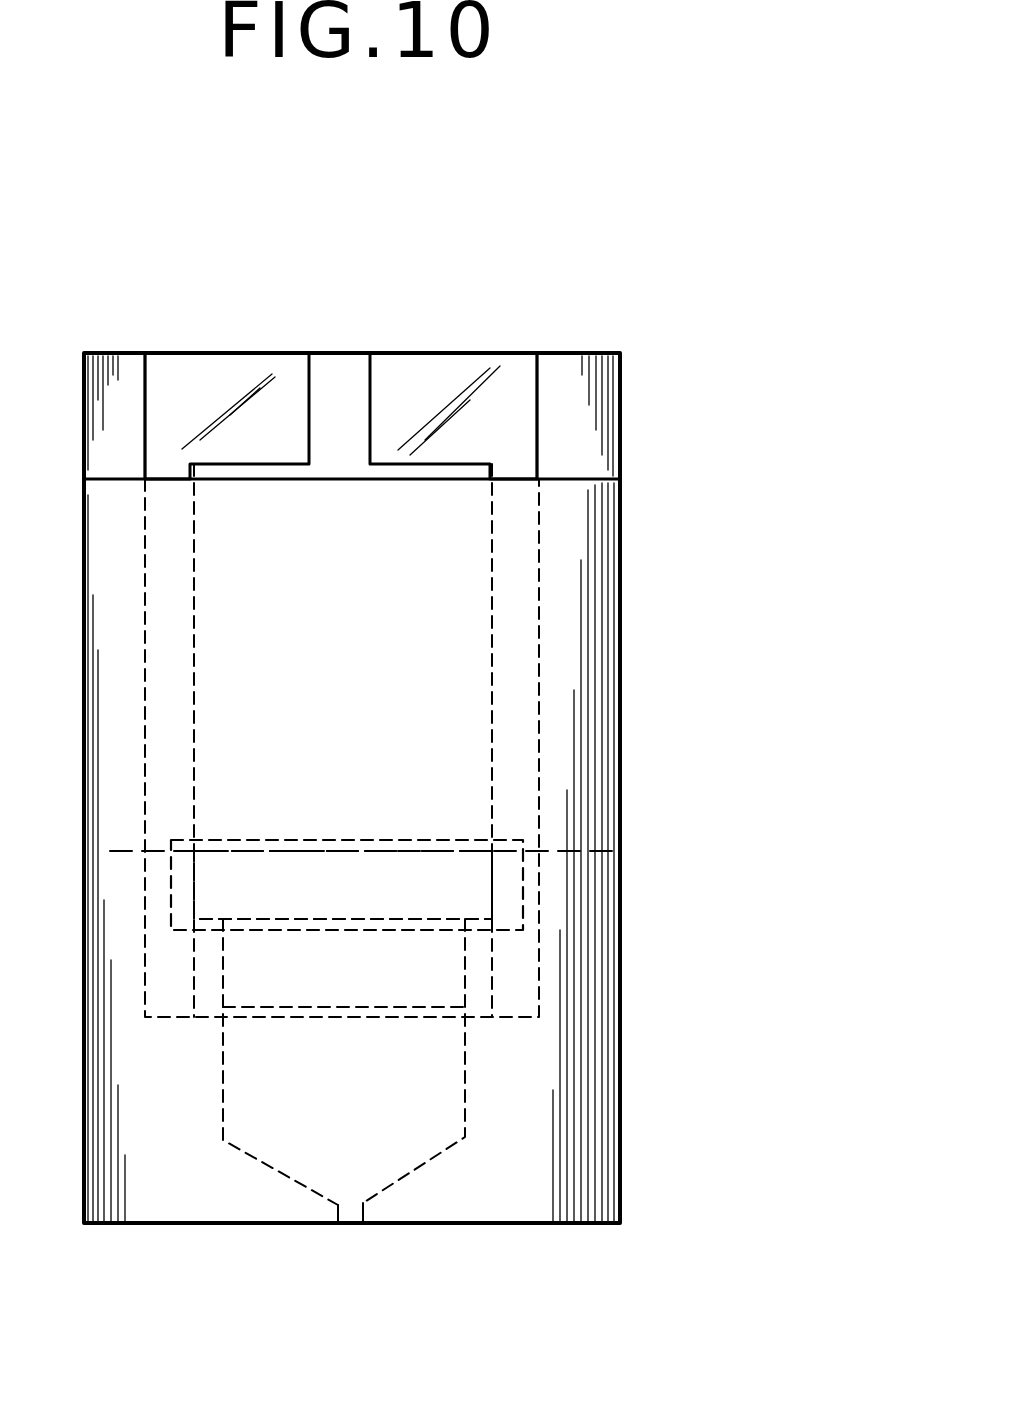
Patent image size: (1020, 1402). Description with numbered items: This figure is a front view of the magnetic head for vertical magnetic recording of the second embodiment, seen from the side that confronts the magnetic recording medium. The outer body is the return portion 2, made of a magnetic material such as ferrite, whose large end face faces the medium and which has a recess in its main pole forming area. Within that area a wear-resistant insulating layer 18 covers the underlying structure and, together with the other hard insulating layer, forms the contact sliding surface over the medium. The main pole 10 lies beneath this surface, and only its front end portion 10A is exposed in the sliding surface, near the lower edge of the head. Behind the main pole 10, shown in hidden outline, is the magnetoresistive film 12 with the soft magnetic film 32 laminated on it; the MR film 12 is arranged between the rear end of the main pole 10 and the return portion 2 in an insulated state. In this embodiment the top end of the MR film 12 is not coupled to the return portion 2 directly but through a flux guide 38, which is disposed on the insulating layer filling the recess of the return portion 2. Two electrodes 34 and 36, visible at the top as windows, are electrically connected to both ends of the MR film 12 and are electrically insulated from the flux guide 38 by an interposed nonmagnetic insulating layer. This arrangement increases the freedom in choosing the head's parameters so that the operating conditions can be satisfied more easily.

The return portion 2 is at (610, 405).
The wear-resistant insulating layer 18 is at (608, 592).
The electrode 36 is at (217, 364).
The electrode 34 is at (445, 364).
The flux guide 38 is at (287, 845).
The magnetoresistive film 12 is at (350, 918).
The soft magnetic film 32 is at (350, 918).
The main pole 10 is at (465, 1080).
The front end portion 10A is at (348, 1226).